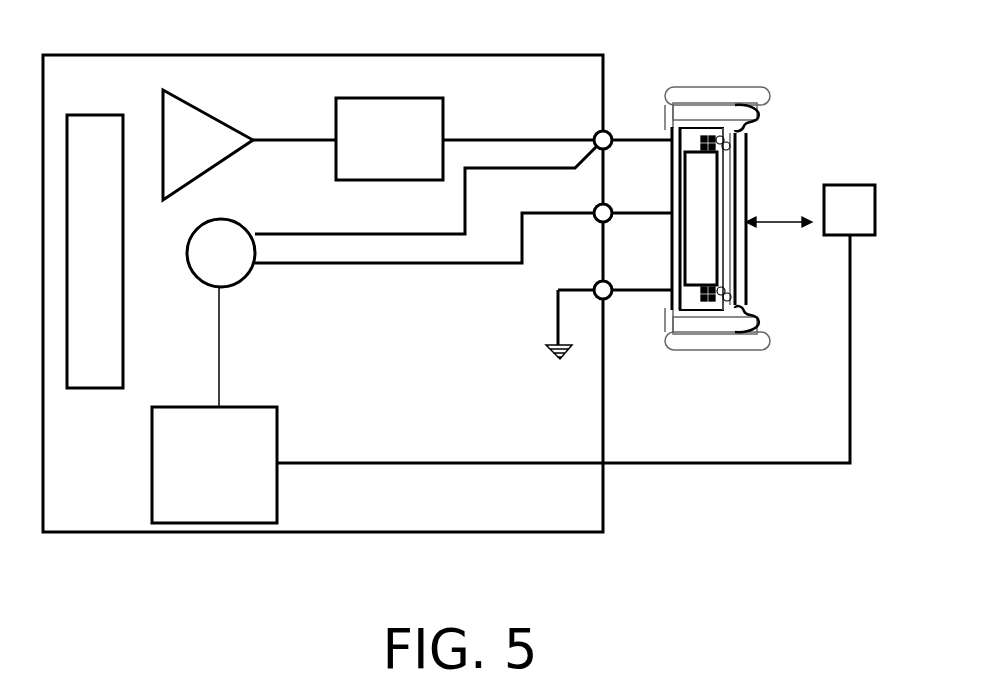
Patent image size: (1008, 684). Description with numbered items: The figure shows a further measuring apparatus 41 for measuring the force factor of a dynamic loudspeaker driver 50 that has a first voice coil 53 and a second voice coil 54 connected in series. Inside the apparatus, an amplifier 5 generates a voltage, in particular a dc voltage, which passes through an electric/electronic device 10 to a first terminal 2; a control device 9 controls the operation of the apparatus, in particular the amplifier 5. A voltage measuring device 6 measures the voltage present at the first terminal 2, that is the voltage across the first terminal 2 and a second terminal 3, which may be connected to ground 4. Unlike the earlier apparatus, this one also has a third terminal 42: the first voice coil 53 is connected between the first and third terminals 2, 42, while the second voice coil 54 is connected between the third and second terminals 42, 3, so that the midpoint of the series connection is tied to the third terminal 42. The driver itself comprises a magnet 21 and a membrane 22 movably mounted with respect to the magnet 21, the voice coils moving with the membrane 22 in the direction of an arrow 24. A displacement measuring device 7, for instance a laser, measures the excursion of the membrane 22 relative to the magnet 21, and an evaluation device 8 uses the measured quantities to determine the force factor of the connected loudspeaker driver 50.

The measuring apparatus 41 is at (103, 44).
The control device 9 is at (95, 251).
The amplifier 5 is at (208, 145).
The electric/electronic device 10 is at (389, 139).
The voltage measuring device 6 is at (221, 253).
The evaluation device 8 is at (214, 465).
The displacement measuring device 7 is at (849, 210).
The first terminal 2 is at (608, 130).
The third terminal 42 is at (597, 222).
The second terminal 3 is at (610, 297).
The ground 4 is at (548, 352).
The dynamic loudspeaker driver 50 is at (771, 223).
The first voice coil 53 is at (705, 135).
The second voice coil 54 is at (717, 145).
The membrane 22 is at (748, 297).
The magnet 21 is at (700, 275).
The arrow 24 is at (785, 220).